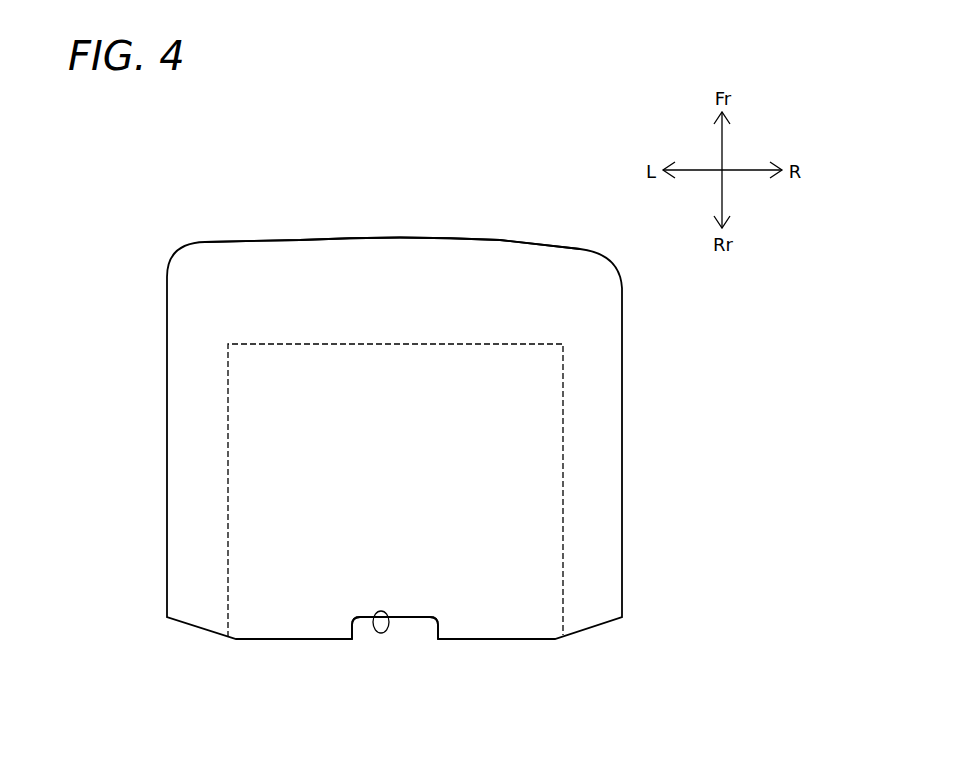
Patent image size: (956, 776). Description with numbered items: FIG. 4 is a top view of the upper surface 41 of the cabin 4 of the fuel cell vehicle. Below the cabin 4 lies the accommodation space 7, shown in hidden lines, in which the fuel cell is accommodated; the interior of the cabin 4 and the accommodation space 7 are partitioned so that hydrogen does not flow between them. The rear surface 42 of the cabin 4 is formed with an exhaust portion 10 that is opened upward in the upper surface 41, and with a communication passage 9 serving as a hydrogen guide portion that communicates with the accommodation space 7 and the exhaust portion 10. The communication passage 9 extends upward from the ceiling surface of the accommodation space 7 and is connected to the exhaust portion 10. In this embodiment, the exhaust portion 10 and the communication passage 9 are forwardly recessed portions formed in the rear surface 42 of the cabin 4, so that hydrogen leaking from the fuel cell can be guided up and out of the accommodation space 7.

The cabin 4 is at (223, 219).
The upper surface 41 is at (497, 272).
The rear surface 42 is at (502, 641).
The accommodation space 7 is at (262, 433).
The communication passage 9 is at (380, 611).
The exhaust portion 10 is at (408, 630).